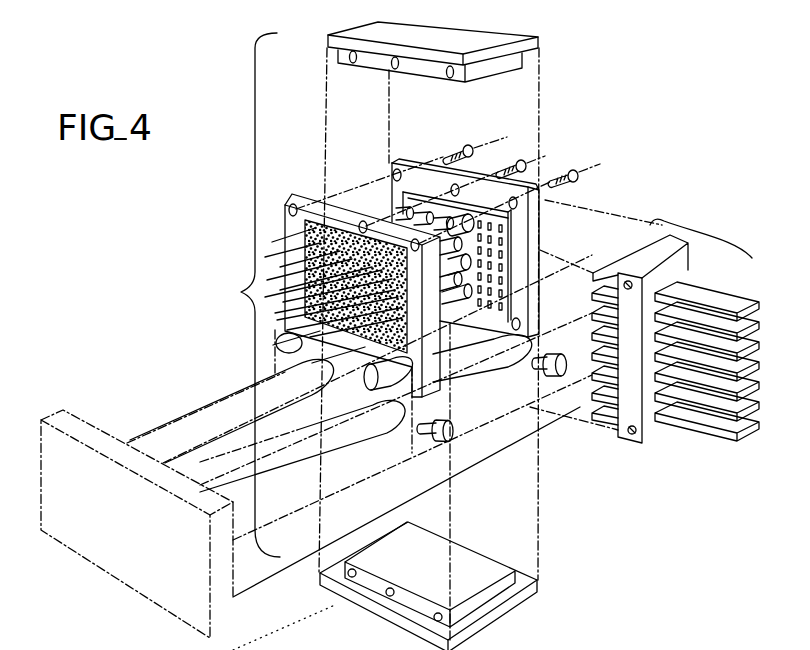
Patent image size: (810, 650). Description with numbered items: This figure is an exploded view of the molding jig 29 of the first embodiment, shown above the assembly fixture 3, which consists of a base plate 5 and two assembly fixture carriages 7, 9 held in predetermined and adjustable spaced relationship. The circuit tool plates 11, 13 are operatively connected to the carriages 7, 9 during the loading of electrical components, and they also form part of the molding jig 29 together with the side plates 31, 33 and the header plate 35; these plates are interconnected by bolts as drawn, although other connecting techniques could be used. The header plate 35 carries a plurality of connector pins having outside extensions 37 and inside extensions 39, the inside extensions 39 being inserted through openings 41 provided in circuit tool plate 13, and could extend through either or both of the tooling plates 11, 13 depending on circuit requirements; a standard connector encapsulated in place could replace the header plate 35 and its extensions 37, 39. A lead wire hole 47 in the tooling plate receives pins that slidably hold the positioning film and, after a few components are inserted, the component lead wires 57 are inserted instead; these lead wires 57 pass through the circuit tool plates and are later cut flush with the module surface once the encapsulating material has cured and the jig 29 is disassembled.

The assembly fixture 3 is at (183, 405).
The base plate 5 is at (42, 455).
The assembly fixture carriage 7 is at (403, 428).
The assembly fixture carriage 9 is at (520, 363).
The circuit tool plate 11 is at (285, 200).
The circuit tool plate 13 is at (415, 178).
The molding jig 29 is at (236, 257).
The side plate 31 is at (538, 44).
The side plate 33 is at (526, 597).
The header plate 35 is at (670, 252).
The outside extensions 37 is at (727, 276).
The inside extensions 39 is at (593, 314).
The openings 41 is at (494, 236).
The lead wire hole 47 is at (306, 241).
The component lead wires 57 is at (270, 314).